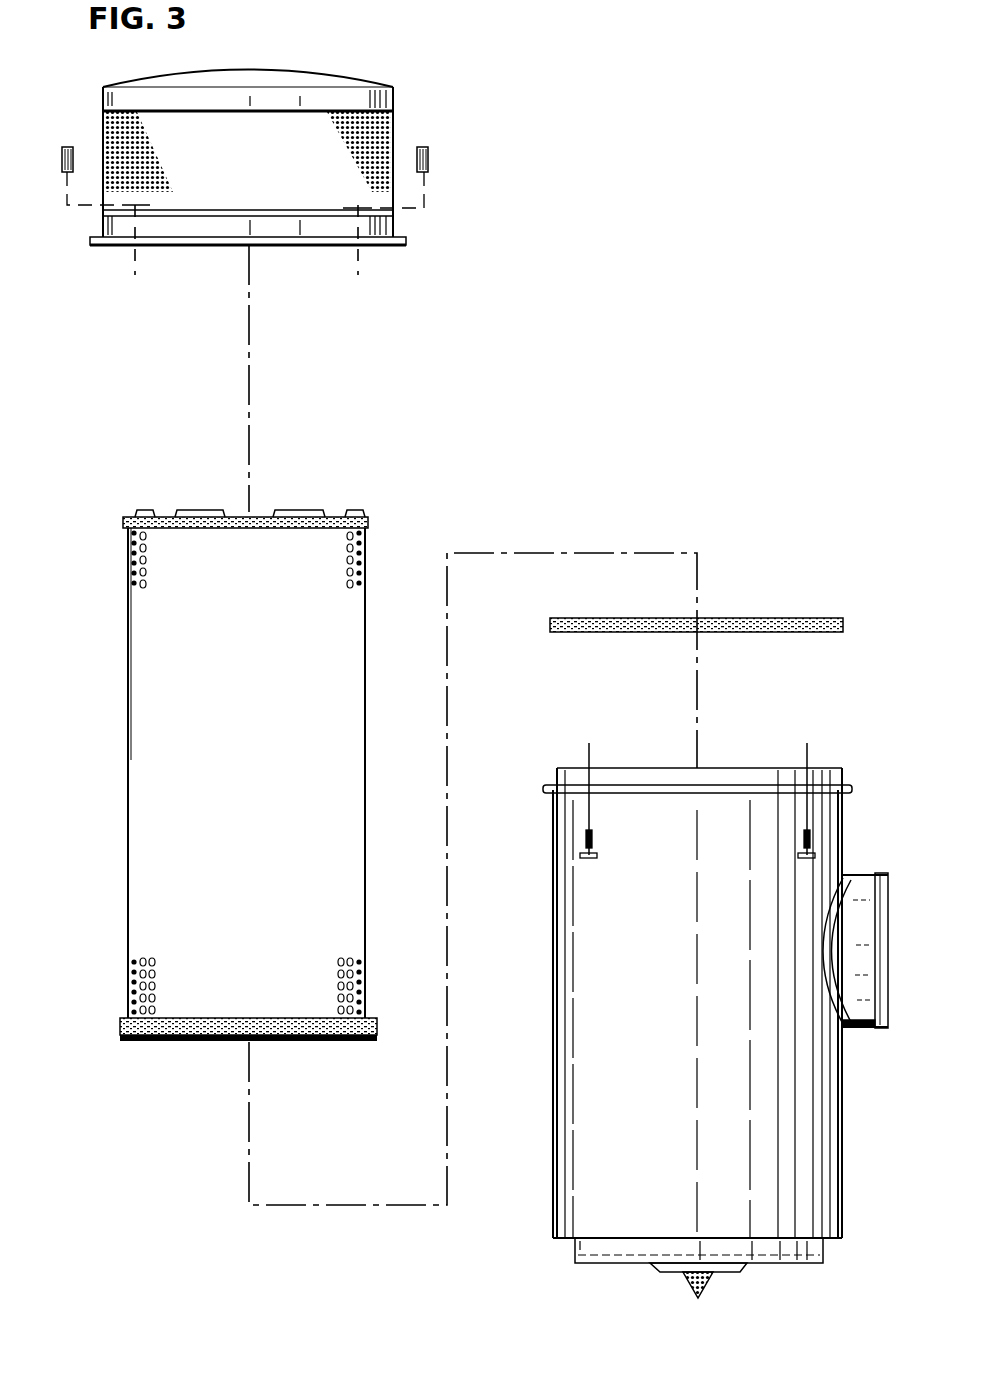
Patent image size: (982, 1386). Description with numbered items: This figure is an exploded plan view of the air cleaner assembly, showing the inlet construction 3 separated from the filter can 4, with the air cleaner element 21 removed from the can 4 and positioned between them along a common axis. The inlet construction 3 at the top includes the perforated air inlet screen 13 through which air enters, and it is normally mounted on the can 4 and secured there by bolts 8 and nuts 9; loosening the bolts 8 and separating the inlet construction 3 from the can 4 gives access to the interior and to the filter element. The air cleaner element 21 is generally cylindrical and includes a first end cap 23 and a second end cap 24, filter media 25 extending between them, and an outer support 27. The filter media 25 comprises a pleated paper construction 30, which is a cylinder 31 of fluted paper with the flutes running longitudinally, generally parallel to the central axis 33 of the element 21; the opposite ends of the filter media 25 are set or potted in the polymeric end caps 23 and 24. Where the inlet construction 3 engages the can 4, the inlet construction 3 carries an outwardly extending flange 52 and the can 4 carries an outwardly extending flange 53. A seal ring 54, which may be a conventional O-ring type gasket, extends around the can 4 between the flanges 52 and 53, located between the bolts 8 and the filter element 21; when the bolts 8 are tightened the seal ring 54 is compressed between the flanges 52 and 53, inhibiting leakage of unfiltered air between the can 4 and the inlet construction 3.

The inlet construction 3 is at (267, 284).
The perforated air inlet screen 13 is at (103, 122).
The nuts 9 is at (62, 152).
The outwardly extending flange 52 is at (407, 242).
The air cleaner element 21 is at (369, 851).
The first end cap 23 is at (360, 517).
The outer support 27 is at (357, 575).
The filter media 25 is at (360, 680).
The pleated paper construction 30 is at (148, 772).
The cylinder 31 is at (355, 808).
The second end cap 24 is at (122, 1020).
The central axis 33 is at (250, 1058).
The seal ring 54 is at (810, 618).
The outwardly extending flange 53 is at (852, 785).
The bolts 8 is at (593, 846).
The can 4 is at (689, 930).